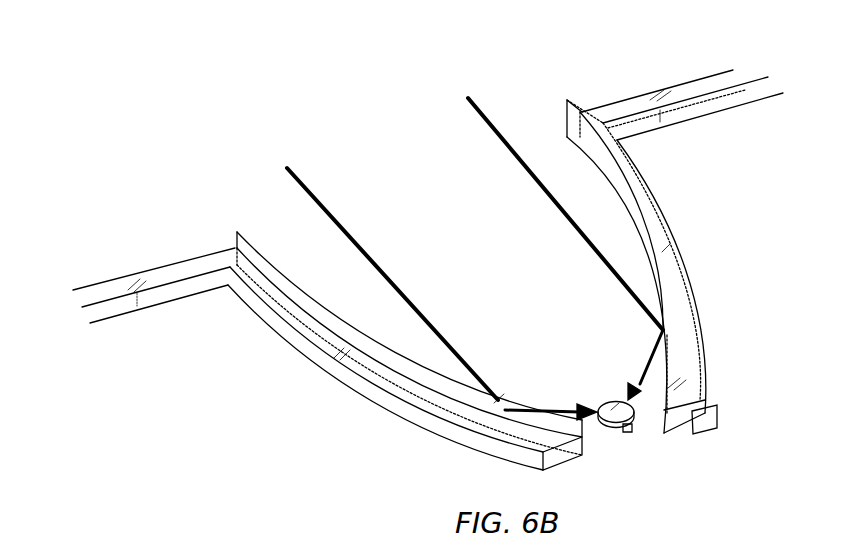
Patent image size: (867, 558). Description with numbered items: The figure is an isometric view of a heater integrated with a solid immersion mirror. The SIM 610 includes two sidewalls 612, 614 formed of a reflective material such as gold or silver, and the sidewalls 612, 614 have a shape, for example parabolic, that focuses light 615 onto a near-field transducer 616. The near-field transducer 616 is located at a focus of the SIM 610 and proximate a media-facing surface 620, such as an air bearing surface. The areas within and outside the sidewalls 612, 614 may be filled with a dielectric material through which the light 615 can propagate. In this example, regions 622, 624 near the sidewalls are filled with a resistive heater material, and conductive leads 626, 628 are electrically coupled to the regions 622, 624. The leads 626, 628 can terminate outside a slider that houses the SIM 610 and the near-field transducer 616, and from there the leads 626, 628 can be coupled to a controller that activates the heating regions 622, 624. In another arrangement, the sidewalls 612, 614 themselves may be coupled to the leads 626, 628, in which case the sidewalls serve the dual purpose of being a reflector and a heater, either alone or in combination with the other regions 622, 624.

The solid immersion mirror 610 is at (256, 112).
The sidewall 612 is at (237, 232).
The sidewall 614 is at (567, 100).
The light 615 is at (290, 175).
The near-field transducer 616 is at (612, 402).
The media-facing surface 620 is at (707, 428).
The region 622 is at (368, 399).
The region 624 is at (700, 310).
The conductive lead 626 is at (120, 277).
The conductive lead 628 is at (693, 82).